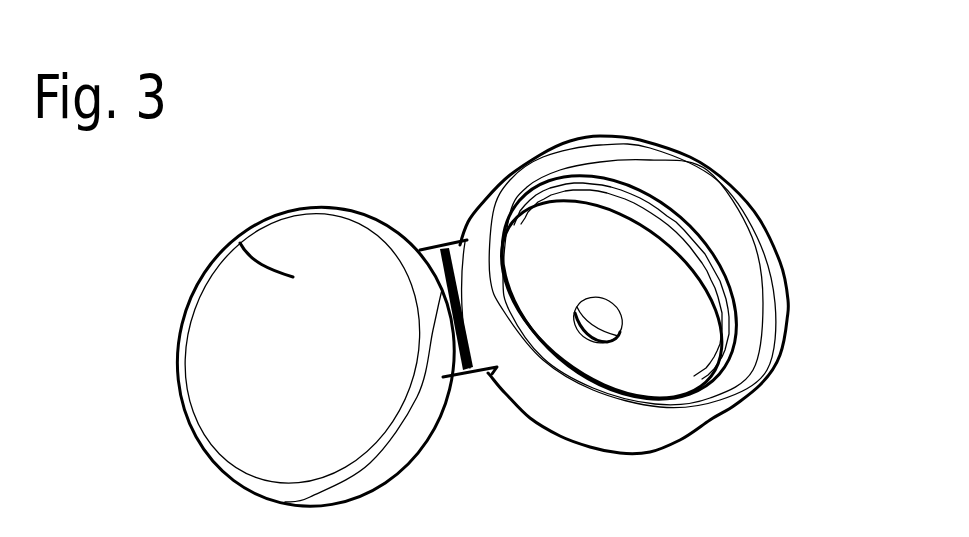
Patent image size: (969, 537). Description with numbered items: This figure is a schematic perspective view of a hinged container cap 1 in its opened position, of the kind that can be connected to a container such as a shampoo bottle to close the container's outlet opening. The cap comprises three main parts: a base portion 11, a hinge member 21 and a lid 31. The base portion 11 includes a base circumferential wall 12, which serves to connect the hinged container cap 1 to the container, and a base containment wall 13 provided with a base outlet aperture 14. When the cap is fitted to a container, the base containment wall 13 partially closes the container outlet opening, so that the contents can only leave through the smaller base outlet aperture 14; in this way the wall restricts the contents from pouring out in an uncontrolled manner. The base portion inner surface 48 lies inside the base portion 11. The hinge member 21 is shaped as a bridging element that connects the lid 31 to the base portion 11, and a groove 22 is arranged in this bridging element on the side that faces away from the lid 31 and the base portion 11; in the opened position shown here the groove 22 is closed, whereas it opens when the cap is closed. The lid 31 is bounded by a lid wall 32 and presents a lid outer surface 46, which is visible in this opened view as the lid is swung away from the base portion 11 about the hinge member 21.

The hinged container cap 1 is at (474, 138).
The base portion 11 is at (684, 137).
The base circumferential wall 12 is at (667, 427).
The base containment wall 13 is at (663, 320).
The base outlet aperture 14 is at (597, 332).
The hinge member 21 is at (450, 250).
The groove 22 is at (490, 377).
The lid 31 is at (175, 333).
The lid wall 32 is at (240, 241).
The lid outer surface 46 is at (310, 240).
The base portion inner surface 48 is at (632, 273).